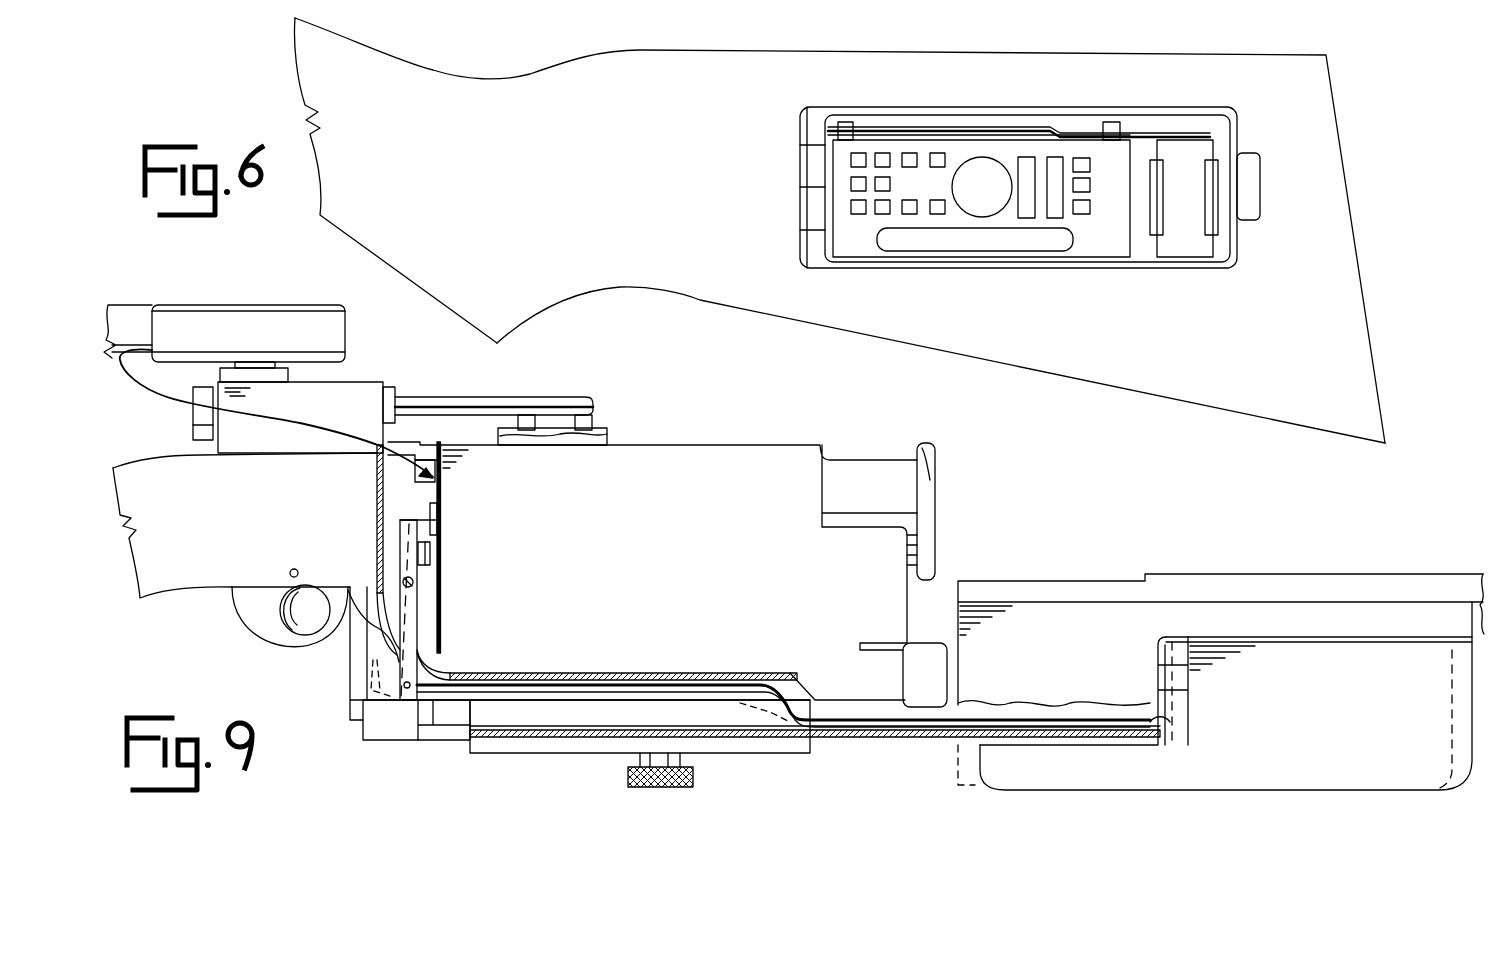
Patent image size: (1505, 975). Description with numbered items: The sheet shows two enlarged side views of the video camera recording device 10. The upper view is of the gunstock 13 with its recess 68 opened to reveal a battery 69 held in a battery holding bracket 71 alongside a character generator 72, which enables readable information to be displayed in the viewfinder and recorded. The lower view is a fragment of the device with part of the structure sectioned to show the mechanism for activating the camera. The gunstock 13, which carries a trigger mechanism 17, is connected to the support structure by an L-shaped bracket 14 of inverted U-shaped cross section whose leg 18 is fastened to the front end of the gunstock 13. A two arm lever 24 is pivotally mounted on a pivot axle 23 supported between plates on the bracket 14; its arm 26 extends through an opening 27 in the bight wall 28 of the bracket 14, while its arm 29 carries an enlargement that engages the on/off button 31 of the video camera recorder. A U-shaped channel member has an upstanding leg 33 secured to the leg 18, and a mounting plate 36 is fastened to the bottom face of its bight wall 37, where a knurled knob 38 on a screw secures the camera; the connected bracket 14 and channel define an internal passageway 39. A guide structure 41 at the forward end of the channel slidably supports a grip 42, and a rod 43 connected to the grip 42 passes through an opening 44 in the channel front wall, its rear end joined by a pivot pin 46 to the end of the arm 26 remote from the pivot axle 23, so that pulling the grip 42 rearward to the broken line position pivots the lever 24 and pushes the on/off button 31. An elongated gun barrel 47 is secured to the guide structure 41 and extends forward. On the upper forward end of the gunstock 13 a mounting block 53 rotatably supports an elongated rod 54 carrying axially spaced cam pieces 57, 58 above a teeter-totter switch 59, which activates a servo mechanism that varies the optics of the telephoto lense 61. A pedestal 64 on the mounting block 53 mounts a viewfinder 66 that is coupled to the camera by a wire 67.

In FIG. 9, the video camera recording device 10 is at (350, 770).
In FIG. 6, the gunstock 13 is at (890, 48).
In FIG. 9, the gunstock 13 is at (166, 596).
In FIG. 9, the bracket 14 is at (678, 440).
In FIG. 9, the trigger mechanism 17 is at (275, 612).
In FIG. 9, the leg 18 is at (330, 660).
In FIG. 9, the pivot axle 23 is at (415, 582).
In FIG. 9, the two arm lever 24 is at (425, 628).
In FIG. 9, the arm 26 is at (418, 660).
In FIG. 9, the opening 27 is at (377, 595).
In FIG. 9, the bight wall 28 is at (377, 545).
In FIG. 9, the arm 29 is at (395, 522).
In FIG. 9, the on/off button 31 is at (442, 534).
In FIG. 9, the leg 33 is at (520, 720).
In FIG. 9, the mounting plate 36 is at (595, 745).
In FIG. 9, the bight wall 37 is at (555, 735).
In FIG. 9, the knurled knob 38 is at (656, 790).
In FIG. 9, the internal passageway 39 is at (708, 712).
In FIG. 9, the guide structure 41 is at (1062, 600).
In FIG. 9, the grip 42 is at (1305, 765).
In FIG. 9, the rod 43 is at (920, 718).
In FIG. 9, the opening 44 is at (1172, 722).
In FIG. 9, the pivot pin 46 is at (406, 690).
In FIG. 9, the gun barrel 47 is at (1280, 582).
In FIG. 9, the mounting block 53 is at (350, 392).
In FIG. 9, the elongated rod 54 is at (425, 398).
In FIG. 9, the cam piece 57 is at (524, 416).
In FIG. 9, the cam piece 58 is at (583, 416).
In FIG. 9, the teeter-totter switch 59 is at (606, 424).
In FIG. 9, the telephoto lense 61 is at (852, 483).
In FIG. 9, the pedestal 64 is at (258, 368).
In FIG. 9, the viewfinder 66 is at (195, 316).
In FIG. 9, the wire 67 is at (262, 426).
In FIG. 6, the recess 68 is at (1222, 130).
In FIG. 6, the battery 69 is at (1185, 243).
In FIG. 6, the battery holding bracket 71 is at (1210, 215).
In FIG. 6, the character generator 72 is at (1097, 262).